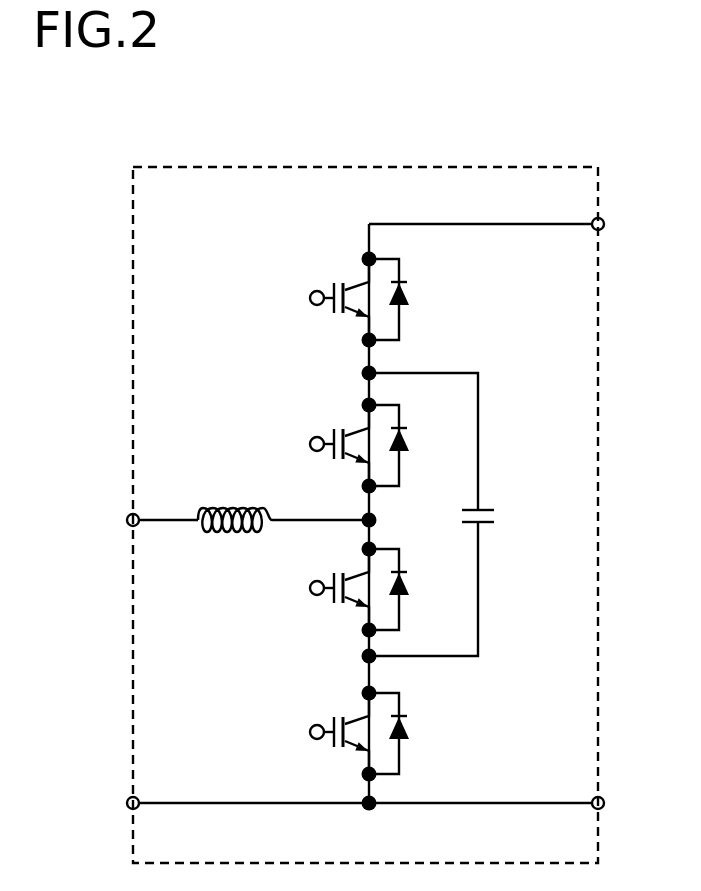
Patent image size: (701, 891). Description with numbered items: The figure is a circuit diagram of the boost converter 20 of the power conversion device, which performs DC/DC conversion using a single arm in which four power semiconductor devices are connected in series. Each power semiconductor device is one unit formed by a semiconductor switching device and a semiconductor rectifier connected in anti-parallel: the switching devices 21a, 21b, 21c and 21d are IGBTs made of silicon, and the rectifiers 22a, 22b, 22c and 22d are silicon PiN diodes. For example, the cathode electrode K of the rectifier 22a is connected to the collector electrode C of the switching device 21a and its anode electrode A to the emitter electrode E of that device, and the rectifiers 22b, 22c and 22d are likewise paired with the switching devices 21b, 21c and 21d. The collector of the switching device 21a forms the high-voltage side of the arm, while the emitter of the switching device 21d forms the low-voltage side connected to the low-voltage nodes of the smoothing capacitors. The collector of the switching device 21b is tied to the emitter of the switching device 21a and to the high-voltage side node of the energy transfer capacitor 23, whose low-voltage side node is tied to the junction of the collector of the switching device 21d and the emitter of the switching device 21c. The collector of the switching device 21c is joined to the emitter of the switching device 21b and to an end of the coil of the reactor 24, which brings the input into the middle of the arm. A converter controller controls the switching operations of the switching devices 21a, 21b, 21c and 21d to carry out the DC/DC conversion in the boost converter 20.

The boost converter 20 is at (185, 167).
The semiconductor switching device 21a is at (333, 287).
The semiconductor switching device 21b is at (316, 444).
The semiconductor switching device 21c is at (317, 589).
The semiconductor switching device 21d is at (314, 727).
The semiconductor rectifier 22a is at (408, 287).
The semiconductor rectifier 22b is at (417, 446).
The semiconductor rectifier 22c is at (415, 590).
The semiconductor rectifier 22d is at (421, 734).
The energy transfer capacitor 23 is at (494, 519).
The reactor 24 is at (217, 506).